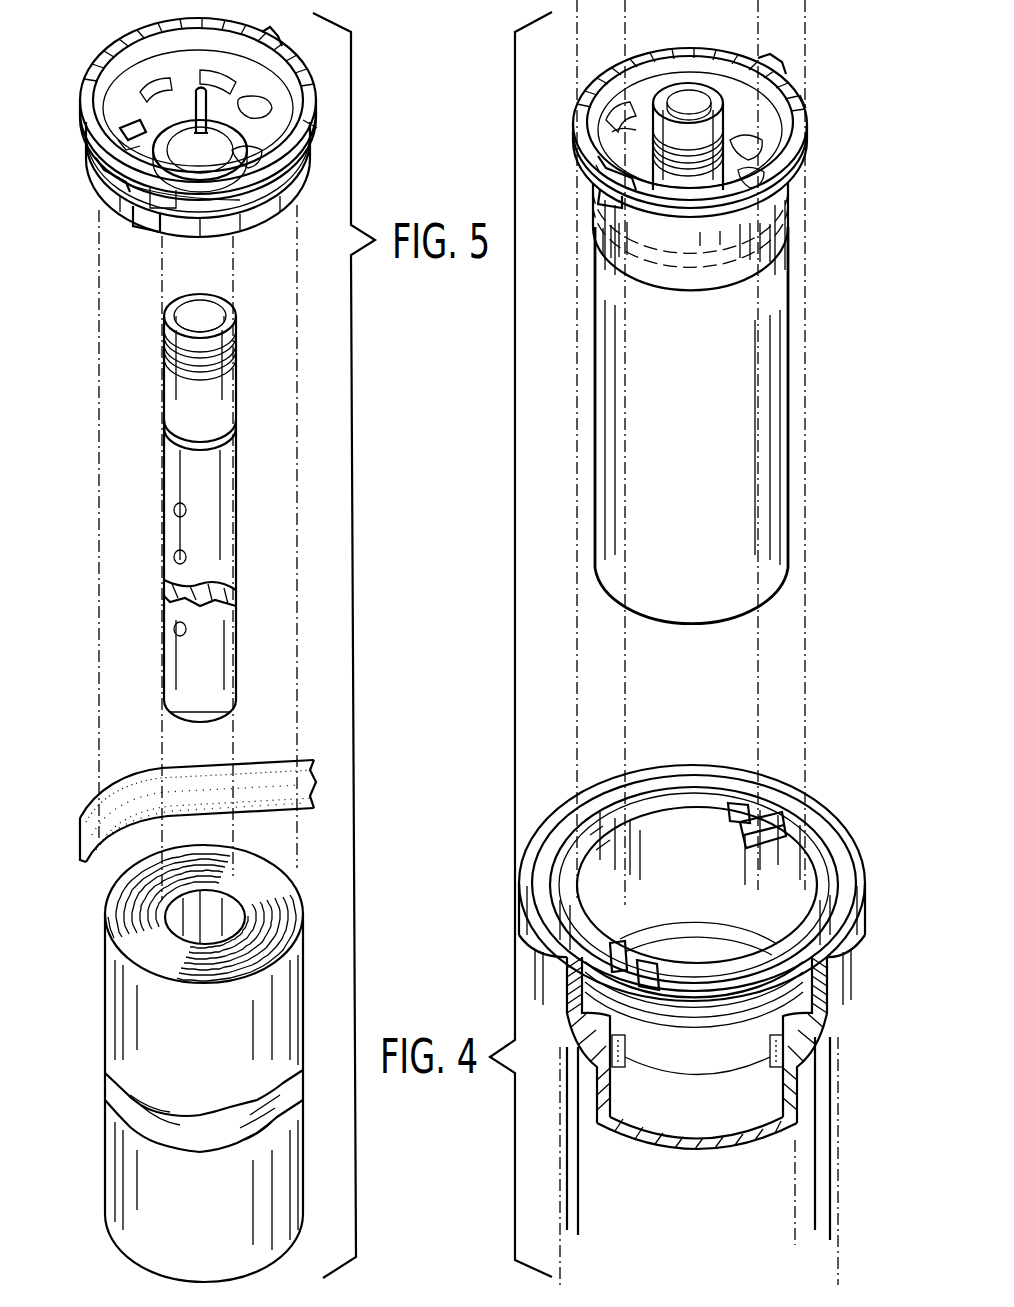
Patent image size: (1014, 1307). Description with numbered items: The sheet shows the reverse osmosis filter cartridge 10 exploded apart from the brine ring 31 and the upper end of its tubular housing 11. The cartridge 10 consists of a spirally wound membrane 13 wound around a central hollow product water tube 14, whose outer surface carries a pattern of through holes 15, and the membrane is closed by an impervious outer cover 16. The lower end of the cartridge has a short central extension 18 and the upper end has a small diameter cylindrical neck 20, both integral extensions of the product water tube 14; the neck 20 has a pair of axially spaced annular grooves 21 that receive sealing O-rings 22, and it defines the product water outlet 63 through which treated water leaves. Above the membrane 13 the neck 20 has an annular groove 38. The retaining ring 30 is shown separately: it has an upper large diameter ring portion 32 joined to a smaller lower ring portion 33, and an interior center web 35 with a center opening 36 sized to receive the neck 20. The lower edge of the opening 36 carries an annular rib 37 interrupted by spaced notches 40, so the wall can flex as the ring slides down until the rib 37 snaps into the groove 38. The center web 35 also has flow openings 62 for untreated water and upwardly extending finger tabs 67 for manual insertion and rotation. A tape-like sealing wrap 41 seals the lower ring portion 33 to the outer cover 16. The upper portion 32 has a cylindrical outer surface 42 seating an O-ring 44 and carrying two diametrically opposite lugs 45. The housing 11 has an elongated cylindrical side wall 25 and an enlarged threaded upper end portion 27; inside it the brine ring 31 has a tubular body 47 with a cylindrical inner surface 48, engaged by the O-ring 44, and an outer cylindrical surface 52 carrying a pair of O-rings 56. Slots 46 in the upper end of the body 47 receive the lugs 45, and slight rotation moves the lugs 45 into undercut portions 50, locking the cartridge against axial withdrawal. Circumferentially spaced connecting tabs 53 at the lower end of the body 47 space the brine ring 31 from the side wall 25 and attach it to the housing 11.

In FIG. 4, the filter cartridge 10 is at (608, 452).
In FIG. 4, the tubular housing 11 is at (570, 1170).
In FIG. 5, the spirally wound membrane 13 is at (283, 920).
In FIG. 5, the product water tube 14 is at (233, 522).
In FIG. 5, the through holes 15 is at (172, 557).
In FIG. 5, the outer cover 16 is at (280, 1022).
In FIG. 4, the outer cover 16 is at (742, 444).
In FIG. 5, the central extension 18 is at (208, 723).
In FIG. 5, the neck 20 is at (222, 404).
In FIG. 4, the neck 20 is at (677, 183).
In FIG. 5, the annular grooves 21 is at (230, 357).
In FIG. 4, the O-rings 22 is at (678, 100).
In FIG. 4, the cylindrical side wall 25 is at (823, 1156).
In FIG. 4, the enlarged diameter end portion 27 is at (533, 913).
In FIG. 5, the retaining ring 30 is at (78, 98).
In FIG. 4, the retaining ring 30 is at (575, 97).
In FIG. 4, the brine ring 31 is at (690, 1067).
In FIG. 5, the upper ring portion 32 is at (308, 130).
In FIG. 4, the upper ring portion 32 is at (803, 102).
In FIG. 5, the lower ring portion 33 is at (268, 214).
In FIG. 5, the center web 35 is at (246, 100).
In FIG. 5, the center opening 36 is at (184, 103).
In FIG. 5, the annular rib 37 is at (176, 112).
In FIG. 5, the annular groove 38 is at (238, 438).
In FIG. 5, the notches 40 is at (152, 95).
In FIG. 5, the sealing wrap 41 is at (156, 768).
In FIG. 4, the sealing wrap 41 is at (610, 254).
In FIG. 5, the cylindrical outer surface 42 is at (108, 168).
In FIG. 4, the cylindrical outer surface 42 is at (587, 183).
In FIG. 5, the O-ring 44 is at (156, 220).
In FIG. 5, the lugs 45 is at (276, 38).
In FIG. 4, the lugs 45 is at (600, 214).
In FIG. 4, the slots 46 is at (772, 812).
In FIG. 4, the tubular body 47 is at (653, 823).
In FIG. 4, the cylindrical inner surface 48 is at (610, 862).
In FIG. 4, the undercut portions 50 is at (742, 802).
In FIG. 4, the outer cylindrical surface 52 is at (753, 981).
In FIG. 4, the connecting tabs 53 is at (626, 1052).
In FIG. 4, the O-rings 56 is at (700, 1000).
In FIG. 5, the flow openings 62 is at (118, 144).
In FIG. 4, the flow openings 62 is at (767, 161).
In FIG. 4, the product water outlet 63 is at (673, 143).
In FIG. 5, the finger tabs 67 is at (252, 160).
In FIG. 4, the finger tabs 67 is at (620, 110).